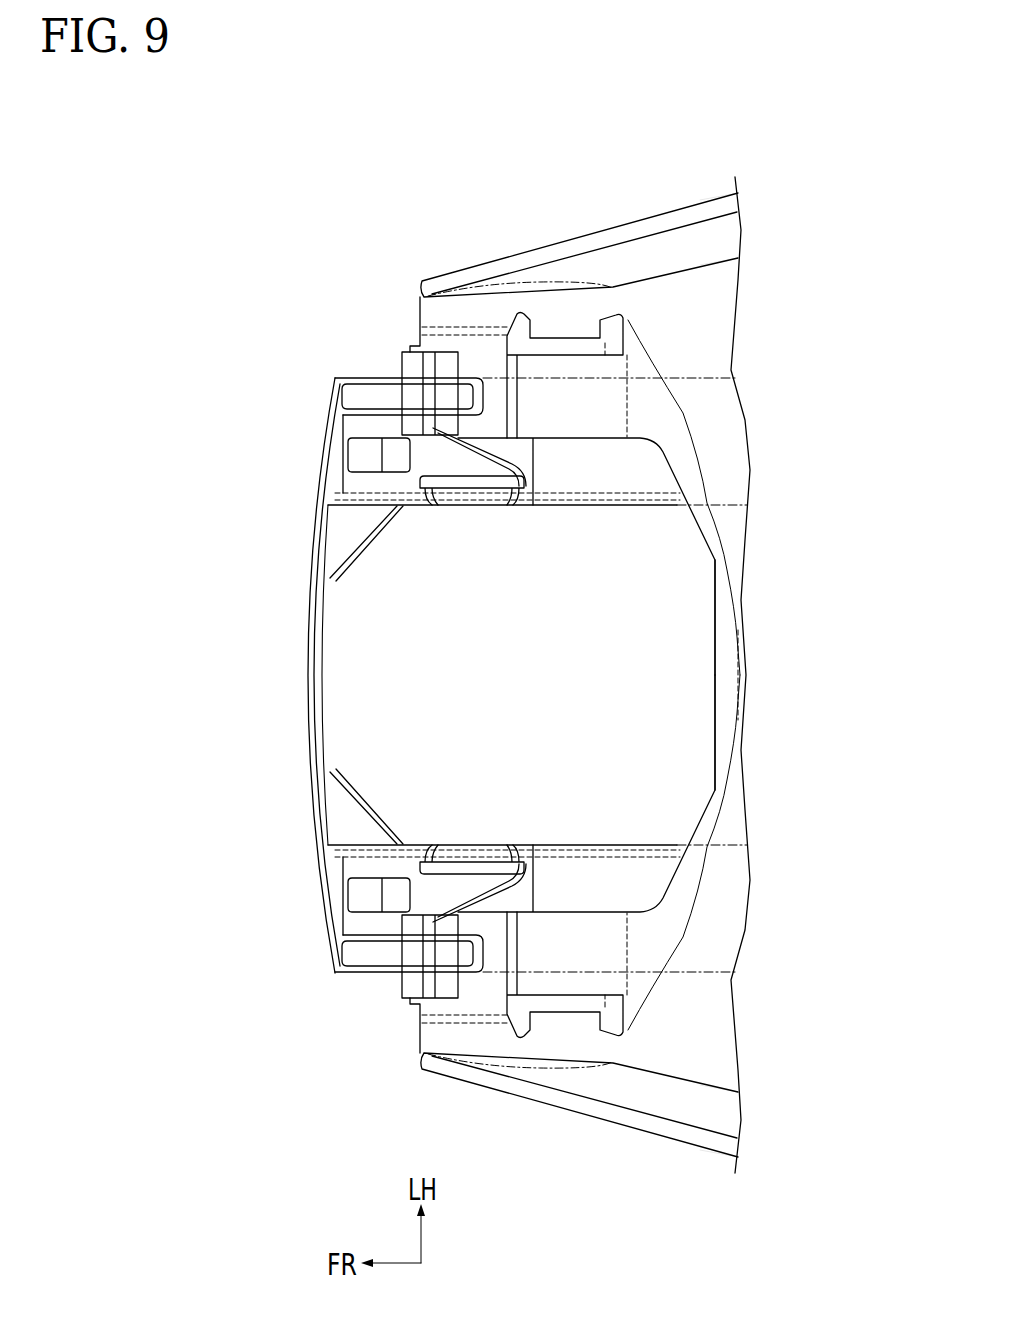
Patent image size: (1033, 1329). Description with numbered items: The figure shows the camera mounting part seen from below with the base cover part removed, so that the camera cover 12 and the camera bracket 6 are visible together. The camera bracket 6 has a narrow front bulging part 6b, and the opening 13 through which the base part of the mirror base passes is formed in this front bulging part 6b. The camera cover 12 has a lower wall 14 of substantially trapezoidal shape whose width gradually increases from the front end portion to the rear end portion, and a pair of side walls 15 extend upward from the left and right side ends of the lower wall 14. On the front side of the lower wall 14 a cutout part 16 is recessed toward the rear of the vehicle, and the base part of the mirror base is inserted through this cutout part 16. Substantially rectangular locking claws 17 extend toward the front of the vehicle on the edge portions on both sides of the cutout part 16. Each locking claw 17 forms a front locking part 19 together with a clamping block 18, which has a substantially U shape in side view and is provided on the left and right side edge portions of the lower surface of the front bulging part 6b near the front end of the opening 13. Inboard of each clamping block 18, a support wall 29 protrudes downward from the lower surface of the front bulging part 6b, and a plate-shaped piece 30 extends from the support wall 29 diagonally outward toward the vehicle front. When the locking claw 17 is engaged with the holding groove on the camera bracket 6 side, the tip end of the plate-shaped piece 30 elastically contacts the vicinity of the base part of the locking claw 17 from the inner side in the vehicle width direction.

The camera bracket 6 is at (441, 666).
The front bulging part 6b is at (600, 447).
The camera cover 12 is at (580, 230).
The opening 13 is at (345, 783).
The lower wall 14 is at (745, 487).
The side walls 15 is at (705, 212).
The cutout part 16 is at (714, 662).
The locking claws 17 is at (371, 1097).
The clamping block 18 is at (392, 397).
The front locking part 19 is at (381, 666).
The support wall 29 is at (455, 500).
The plate-shaped piece 30 is at (477, 442).